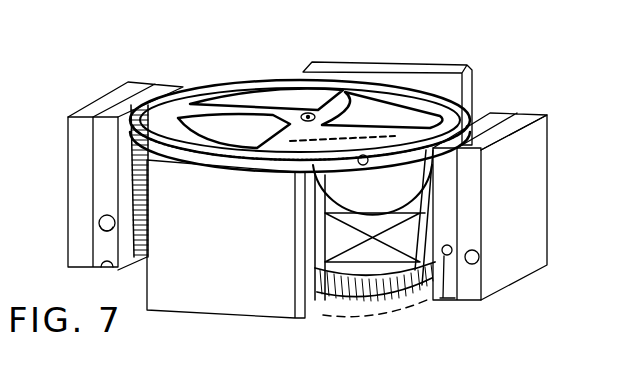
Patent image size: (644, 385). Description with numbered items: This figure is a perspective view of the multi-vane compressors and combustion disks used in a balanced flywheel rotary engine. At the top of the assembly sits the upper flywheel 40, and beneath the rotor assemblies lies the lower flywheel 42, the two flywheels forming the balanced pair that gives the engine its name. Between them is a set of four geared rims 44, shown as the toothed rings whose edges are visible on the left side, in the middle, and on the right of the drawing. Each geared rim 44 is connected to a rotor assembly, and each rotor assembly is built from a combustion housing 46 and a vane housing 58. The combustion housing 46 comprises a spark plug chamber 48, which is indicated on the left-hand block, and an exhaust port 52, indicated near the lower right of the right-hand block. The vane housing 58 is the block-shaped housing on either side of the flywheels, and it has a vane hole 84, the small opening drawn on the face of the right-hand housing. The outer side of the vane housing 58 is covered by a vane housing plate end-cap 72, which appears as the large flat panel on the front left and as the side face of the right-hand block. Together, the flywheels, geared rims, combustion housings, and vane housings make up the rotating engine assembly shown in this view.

The upper flywheel 40 is at (278, 66).
The lower flywheel 42 is at (377, 305).
The geared rim 44 is at (127, 147).
The combustion housing 46 is at (167, 88).
The spark plug chamber 48 is at (97, 206).
The exhaust port 52 is at (453, 300).
The vane housing 58 is at (143, 82).
The vane housing plate end-cap 72 is at (258, 297).
The vane hole 84 is at (472, 250).